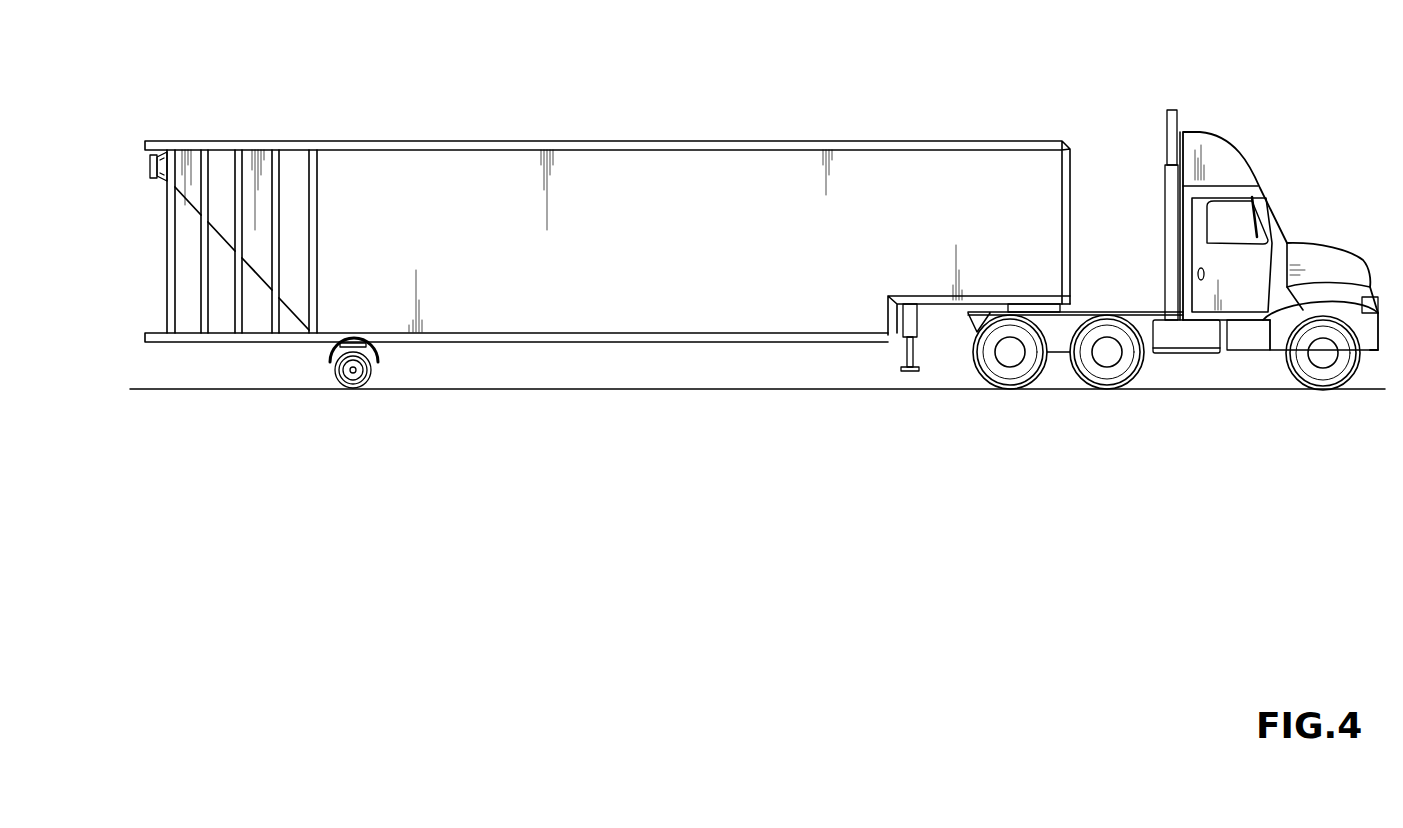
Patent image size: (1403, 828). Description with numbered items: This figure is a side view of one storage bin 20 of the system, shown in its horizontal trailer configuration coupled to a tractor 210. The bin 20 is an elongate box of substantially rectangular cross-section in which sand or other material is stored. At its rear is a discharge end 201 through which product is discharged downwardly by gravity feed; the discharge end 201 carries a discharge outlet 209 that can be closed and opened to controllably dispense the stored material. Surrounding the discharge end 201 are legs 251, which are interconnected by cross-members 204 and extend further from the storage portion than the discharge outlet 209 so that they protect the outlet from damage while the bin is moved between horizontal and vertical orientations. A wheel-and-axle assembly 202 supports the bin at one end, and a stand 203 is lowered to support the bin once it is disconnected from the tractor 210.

The storage bin 20 is at (898, 140).
The discharge end 201 is at (257, 165).
The wheel-and-axle assembly 202 is at (358, 378).
The stand 203 is at (907, 357).
The cross-members 204 is at (240, 255).
The discharge outlet 209 is at (150, 164).
The tractor 210 is at (1243, 338).
The legs 251 is at (153, 139).